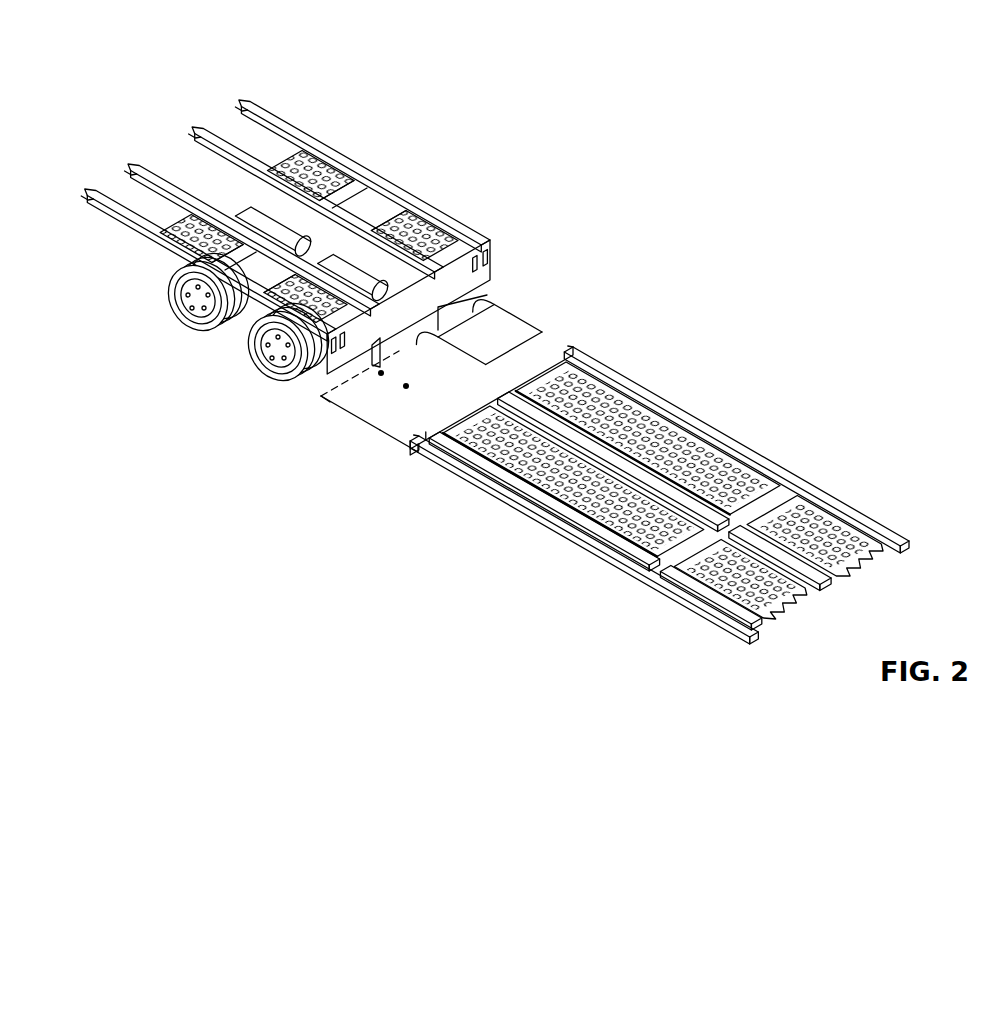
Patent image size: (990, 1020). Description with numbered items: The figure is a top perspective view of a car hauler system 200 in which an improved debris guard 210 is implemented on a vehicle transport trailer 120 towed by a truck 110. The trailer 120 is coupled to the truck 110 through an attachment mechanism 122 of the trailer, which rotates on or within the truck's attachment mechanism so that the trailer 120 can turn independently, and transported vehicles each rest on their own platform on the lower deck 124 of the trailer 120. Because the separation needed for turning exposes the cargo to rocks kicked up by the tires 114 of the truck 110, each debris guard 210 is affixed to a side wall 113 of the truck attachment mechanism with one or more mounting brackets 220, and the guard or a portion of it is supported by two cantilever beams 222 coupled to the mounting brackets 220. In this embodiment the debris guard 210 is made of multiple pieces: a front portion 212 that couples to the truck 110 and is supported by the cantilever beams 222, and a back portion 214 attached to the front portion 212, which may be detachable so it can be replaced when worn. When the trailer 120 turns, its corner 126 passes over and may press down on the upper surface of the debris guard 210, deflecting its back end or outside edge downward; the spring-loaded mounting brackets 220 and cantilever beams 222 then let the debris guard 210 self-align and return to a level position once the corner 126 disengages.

The trailer and ramp assembly 200 is at (864, 81).
The truck 110 is at (402, 192).
The side wall of the truck attachment mechanism 113 is at (393, 375).
The tires 114 is at (252, 353).
The trailer 120 is at (637, 377).
The attachment mechanism of the trailer 122 is at (463, 350).
The lower deck 124 is at (637, 427).
The corner of the trailer 126 is at (415, 442).
The debris guard 210 is at (545, 314).
The front portion 212 is at (325, 395).
The back portion 214 is at (400, 438).
The mounting brackets 220 is at (382, 376).
The cantilever beams 222 is at (332, 400).